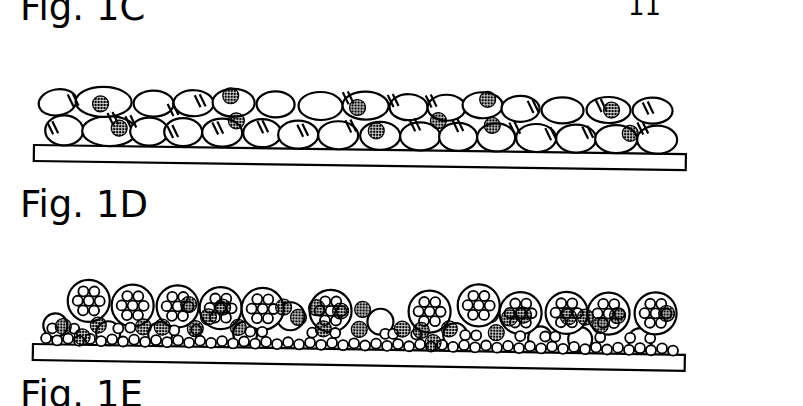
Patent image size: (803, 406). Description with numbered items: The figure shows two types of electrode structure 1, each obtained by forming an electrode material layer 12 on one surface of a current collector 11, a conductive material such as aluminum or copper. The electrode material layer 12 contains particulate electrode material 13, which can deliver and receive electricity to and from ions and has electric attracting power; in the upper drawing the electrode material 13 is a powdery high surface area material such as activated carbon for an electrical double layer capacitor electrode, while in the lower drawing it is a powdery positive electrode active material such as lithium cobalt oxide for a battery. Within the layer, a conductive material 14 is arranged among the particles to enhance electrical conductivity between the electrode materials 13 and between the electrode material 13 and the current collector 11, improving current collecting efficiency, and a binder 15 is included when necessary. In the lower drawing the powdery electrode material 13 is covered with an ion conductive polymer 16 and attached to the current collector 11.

In FIG. 1C, the electrode structure 1 is at (227, 65).
In FIG. 1C, the current collector 11 is at (621, 163).
In FIG. 1D, the current collector 11 is at (620, 362).
In FIG. 1C, the electrode material layer 12 is at (689, 93).
In FIG. 1C, the electrode material 13 is at (571, 95).
In FIG. 1D, the electrode material 13 is at (483, 292).
In FIG. 1C, the conductive material 14 is at (355, 99).
In FIG. 1C, the binder 15 is at (393, 93).
In FIG. 1D, the ion conductive polymer 16 is at (658, 297).